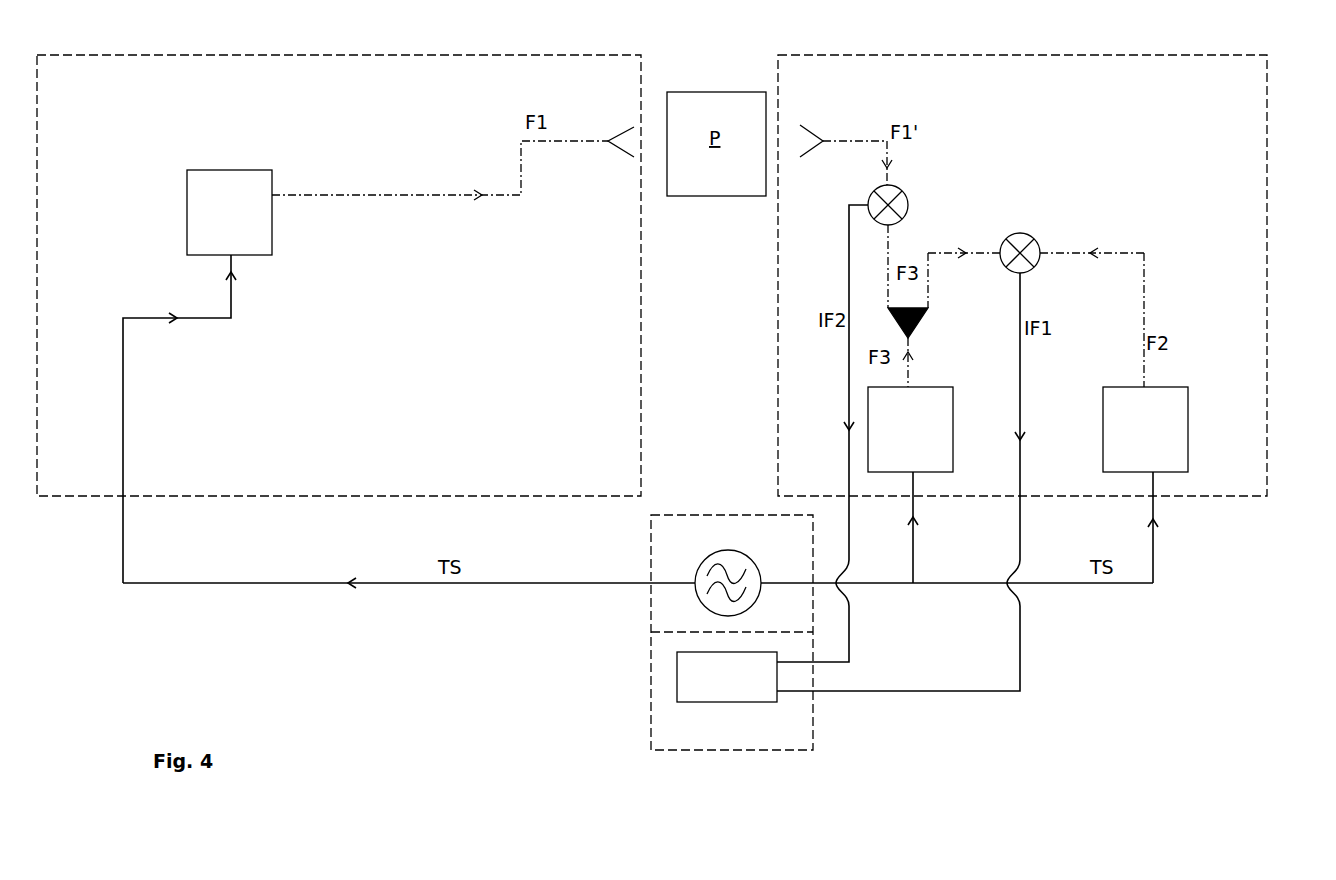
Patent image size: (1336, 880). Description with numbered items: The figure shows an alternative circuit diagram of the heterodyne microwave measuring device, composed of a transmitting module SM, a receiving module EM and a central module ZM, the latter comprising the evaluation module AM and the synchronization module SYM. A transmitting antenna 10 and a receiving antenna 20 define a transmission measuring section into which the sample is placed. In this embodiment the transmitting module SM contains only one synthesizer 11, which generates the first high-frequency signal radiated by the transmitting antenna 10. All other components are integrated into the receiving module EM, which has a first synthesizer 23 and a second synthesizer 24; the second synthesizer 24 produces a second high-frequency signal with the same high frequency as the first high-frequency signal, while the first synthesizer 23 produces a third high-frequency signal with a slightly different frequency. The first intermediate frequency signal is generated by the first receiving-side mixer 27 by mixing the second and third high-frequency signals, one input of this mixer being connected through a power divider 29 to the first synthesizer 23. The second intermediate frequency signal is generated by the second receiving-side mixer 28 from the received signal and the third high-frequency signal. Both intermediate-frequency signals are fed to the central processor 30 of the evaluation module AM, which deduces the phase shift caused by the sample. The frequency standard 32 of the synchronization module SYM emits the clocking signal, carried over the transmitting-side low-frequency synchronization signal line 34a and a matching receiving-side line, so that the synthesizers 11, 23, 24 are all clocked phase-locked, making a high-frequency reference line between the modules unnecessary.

The transmitting antenna 10 is at (606, 139).
The synthesizer 11 is at (229, 212).
The receiving antenna 20 is at (818, 138).
The first synthesizer 23 is at (910, 429).
The second synthesizer 24 is at (1145, 429).
The first receiving-side mixer 27 is at (1025, 244).
The second receiving-side mixer 28 is at (893, 196).
The power divider 29 is at (918, 322).
The central processor 30 is at (727, 677).
The frequency standard 32 is at (737, 563).
The transmitting-side low-frequency synchronization signal line 34a is at (215, 584).
The transmitting module SM is at (72, 472).
The receiving module EM is at (1236, 152).
The evaluation module AM is at (685, 727).
The synchronization module SYM is at (665, 603).
The central module ZM is at (813, 696).